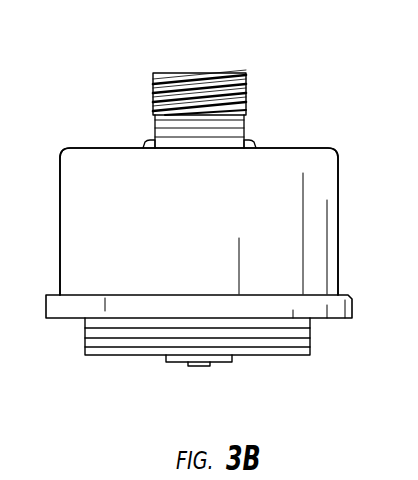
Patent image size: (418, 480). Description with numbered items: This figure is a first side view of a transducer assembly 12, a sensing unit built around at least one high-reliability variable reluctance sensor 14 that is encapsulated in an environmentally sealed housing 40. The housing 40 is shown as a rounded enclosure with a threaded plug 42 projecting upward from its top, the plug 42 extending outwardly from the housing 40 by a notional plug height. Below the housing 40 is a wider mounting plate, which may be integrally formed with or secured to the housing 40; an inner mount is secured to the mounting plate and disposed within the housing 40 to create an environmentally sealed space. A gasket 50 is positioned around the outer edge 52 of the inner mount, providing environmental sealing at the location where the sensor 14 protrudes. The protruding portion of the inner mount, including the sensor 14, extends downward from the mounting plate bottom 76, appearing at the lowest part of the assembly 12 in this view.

The transducer assembly 12 is at (310, 106).
The variable reluctance (VR) sensor 14 is at (196, 367).
The housing 40 is at (78, 158).
The plug 42 is at (192, 72).
The gasket 50 is at (308, 338).
The outer edge 52 is at (308, 328).
The mounting plate bottom 76 is at (70, 319).